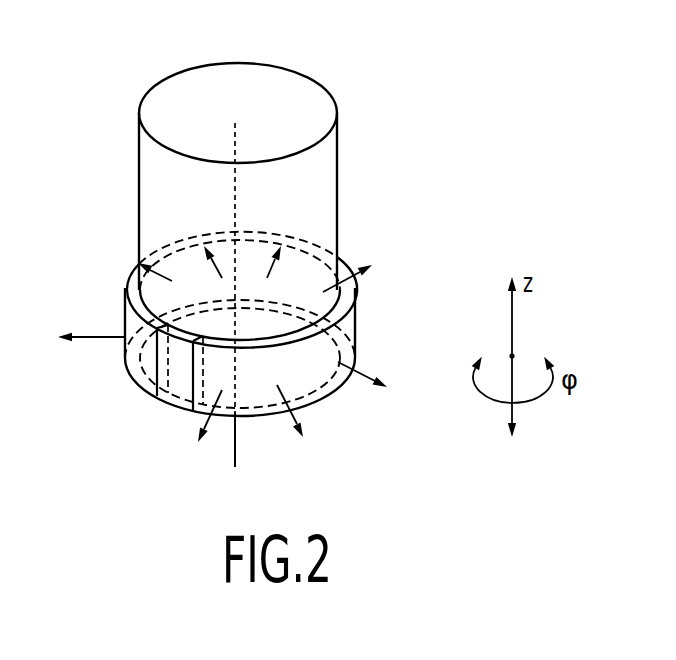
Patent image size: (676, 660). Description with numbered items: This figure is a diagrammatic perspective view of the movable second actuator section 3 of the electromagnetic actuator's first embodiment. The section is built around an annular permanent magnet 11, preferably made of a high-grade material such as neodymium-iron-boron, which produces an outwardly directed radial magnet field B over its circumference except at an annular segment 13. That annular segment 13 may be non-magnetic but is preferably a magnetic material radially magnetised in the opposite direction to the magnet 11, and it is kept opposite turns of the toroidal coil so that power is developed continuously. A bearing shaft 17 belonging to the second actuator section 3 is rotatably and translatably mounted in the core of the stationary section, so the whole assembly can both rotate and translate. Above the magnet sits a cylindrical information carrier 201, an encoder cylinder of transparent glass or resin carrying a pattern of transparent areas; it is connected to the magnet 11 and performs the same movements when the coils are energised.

The information carrier 201 is at (317, 180).
The second actuator section 3 is at (381, 215).
The annular permanent magnet 11 is at (127, 307).
The annular segment 13 is at (182, 380).
The bearing shaft 17 is at (238, 450).
The radial magnet field B is at (355, 339).